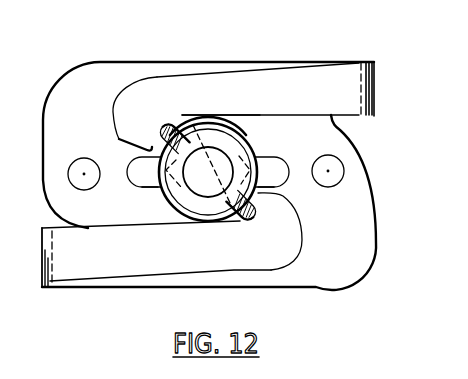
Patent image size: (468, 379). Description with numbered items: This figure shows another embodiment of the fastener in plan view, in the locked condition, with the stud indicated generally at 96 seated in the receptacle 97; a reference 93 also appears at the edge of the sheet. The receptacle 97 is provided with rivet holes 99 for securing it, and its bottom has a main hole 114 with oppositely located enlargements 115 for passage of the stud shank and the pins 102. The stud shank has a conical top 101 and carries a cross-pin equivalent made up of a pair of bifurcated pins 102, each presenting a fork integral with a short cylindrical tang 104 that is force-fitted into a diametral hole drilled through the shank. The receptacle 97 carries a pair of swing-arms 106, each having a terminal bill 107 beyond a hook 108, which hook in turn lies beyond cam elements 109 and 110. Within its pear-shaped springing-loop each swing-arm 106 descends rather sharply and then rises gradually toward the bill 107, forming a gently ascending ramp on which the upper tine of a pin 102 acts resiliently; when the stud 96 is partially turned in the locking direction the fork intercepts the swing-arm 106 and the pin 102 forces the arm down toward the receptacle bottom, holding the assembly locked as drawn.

The clamp assembly 93 is at (7, 82).
The stud 96 is at (240, 129).
The receptacle 97 is at (336, 285).
The rivet holes 99 is at (70, 158).
The conical top 101 is at (242, 201).
The bifurcated pins 102 is at (159, 118).
The short cylindrical tang 104 is at (257, 150).
The swing-arms 106 is at (321, 82).
The terminal bill 107 is at (147, 143).
The hook 108 is at (266, 220).
The cam element 109 is at (181, 114).
The cam element 110 is at (190, 112).
The main hole 114 is at (211, 122).
The enlargements 115 is at (281, 178).